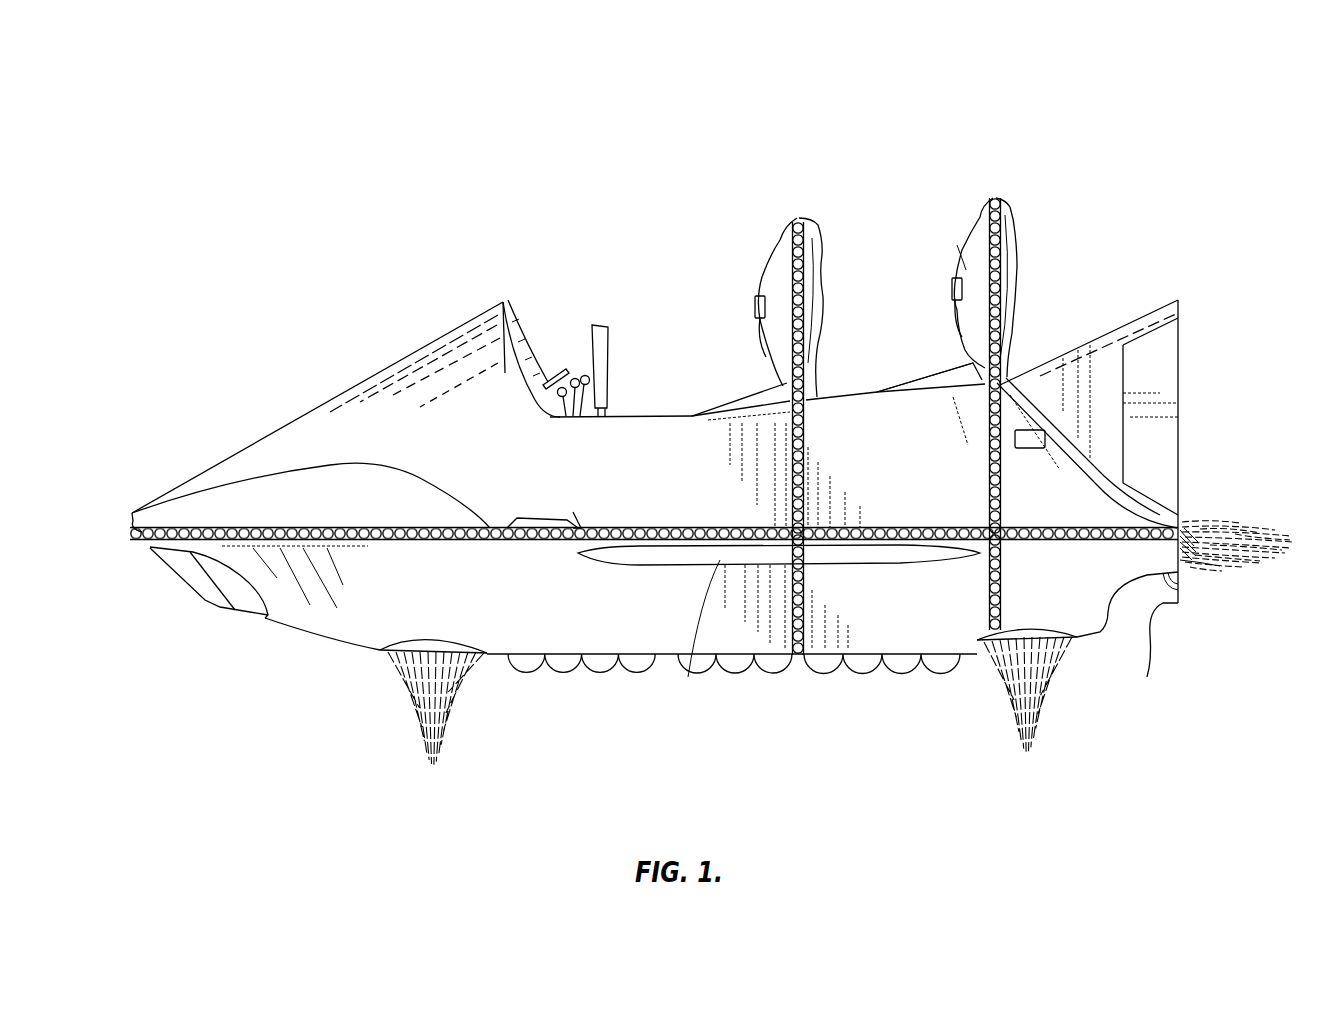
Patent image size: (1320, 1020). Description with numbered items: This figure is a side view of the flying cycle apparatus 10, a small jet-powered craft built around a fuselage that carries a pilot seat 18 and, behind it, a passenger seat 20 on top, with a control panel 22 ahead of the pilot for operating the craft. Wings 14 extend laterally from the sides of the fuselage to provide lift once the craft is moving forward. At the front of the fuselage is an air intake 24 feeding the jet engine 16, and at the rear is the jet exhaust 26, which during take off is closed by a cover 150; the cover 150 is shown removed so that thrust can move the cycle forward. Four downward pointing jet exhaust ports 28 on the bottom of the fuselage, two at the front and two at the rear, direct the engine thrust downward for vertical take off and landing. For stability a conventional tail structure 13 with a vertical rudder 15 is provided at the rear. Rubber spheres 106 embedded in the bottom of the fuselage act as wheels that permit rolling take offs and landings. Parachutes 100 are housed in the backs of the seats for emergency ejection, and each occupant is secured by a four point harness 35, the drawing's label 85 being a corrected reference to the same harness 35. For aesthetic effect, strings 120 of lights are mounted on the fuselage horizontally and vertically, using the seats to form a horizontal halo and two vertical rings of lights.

The flying cycle apparatus 10 is at (497, 187).
The strings of lights 120 is at (795, 222).
The parachutes 100 is at (827, 307).
The four point harness 85 is at (765, 272).
The four point harness 35 is at (957, 245).
The control panel 22 is at (540, 325).
The pilot seat 18 is at (733, 393).
The passenger seat 20 is at (925, 360).
The tail structure 13 is at (1135, 288).
The vertical rudder 15 is at (1178, 352).
The jet engine 16 is at (1193, 528).
The air intake 24 is at (200, 592).
The jet exhaust ports 28 is at (413, 672).
The wings 14 is at (740, 557).
The rubber spheres 106 is at (782, 668).
The cover 150 is at (1135, 652).
The jet exhaust 26 is at (1213, 577).